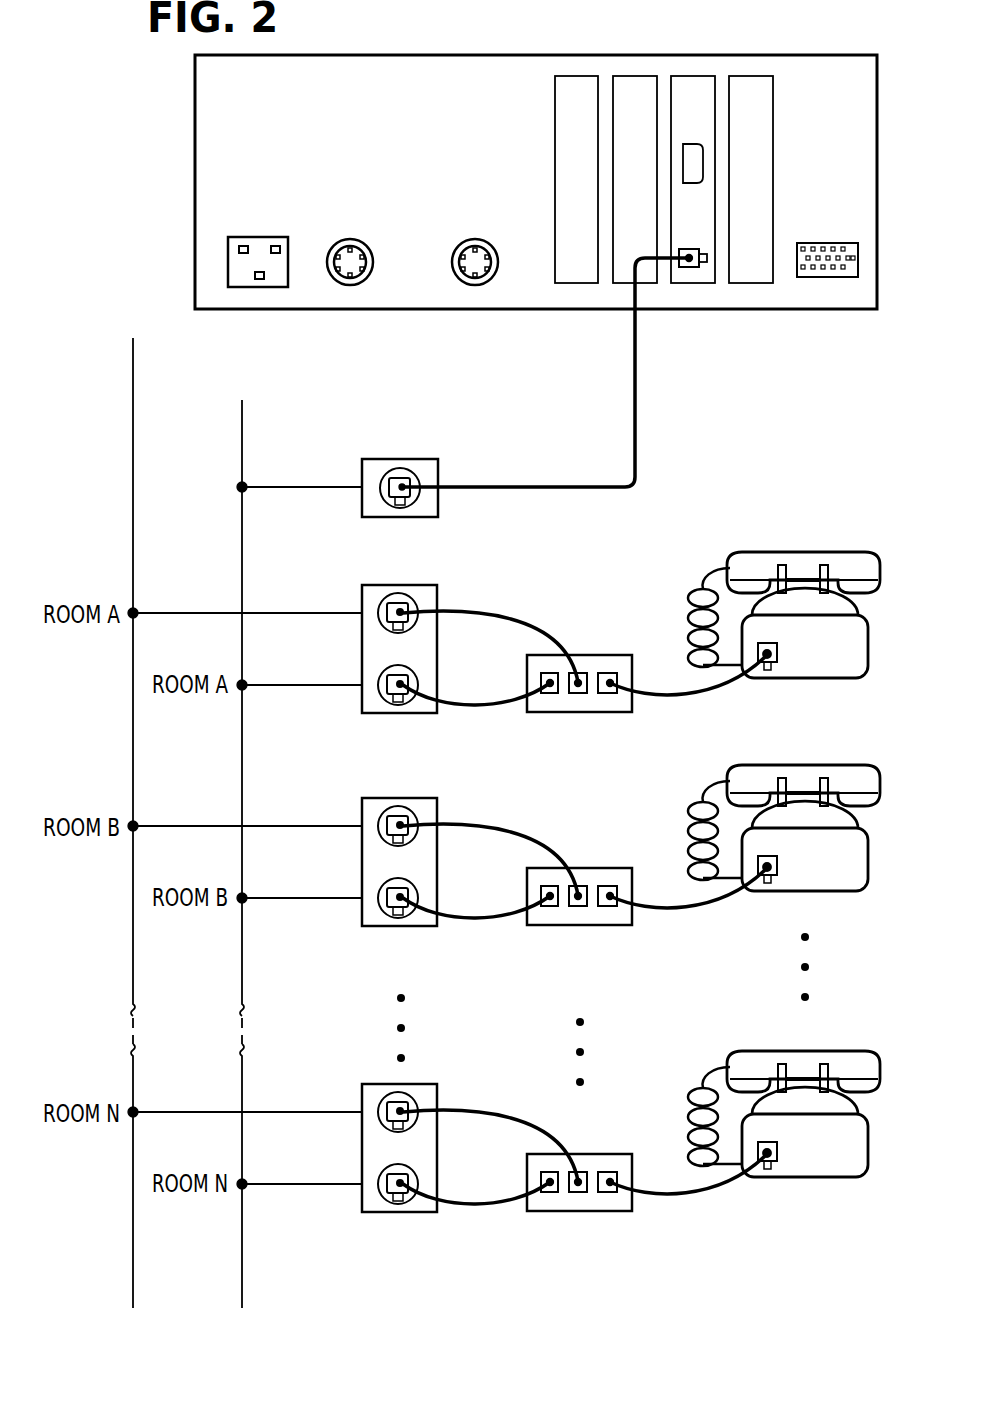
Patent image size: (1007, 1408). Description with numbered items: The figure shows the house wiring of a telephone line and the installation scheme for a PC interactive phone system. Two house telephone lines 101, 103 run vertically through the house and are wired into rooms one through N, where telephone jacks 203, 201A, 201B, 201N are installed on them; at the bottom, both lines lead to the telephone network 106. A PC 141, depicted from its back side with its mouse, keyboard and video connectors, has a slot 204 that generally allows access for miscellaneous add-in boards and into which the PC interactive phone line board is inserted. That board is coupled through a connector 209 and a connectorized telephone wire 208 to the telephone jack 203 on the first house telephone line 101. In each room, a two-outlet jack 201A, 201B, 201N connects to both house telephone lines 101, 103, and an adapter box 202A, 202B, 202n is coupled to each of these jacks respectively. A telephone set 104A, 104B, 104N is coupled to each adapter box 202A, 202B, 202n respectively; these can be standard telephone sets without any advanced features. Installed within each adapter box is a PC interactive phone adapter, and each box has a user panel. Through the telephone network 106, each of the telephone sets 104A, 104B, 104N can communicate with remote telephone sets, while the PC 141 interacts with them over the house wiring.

The PC 141 is at (195, 133).
The slot 204 is at (693, 95).
The connector 209 is at (689, 268).
The connectorized telephone wire 208 is at (637, 412).
The house telephone line 103 is at (133, 368).
The house telephone line 101 is at (242, 425).
The telephone jack 203 is at (422, 517).
The telephone jack 201A is at (375, 713).
The telephone jack 201B is at (369, 881).
The telephone jack 201N is at (368, 1167).
The adapter box 202A is at (608, 712).
The adapter box 202B is at (602, 918).
The adapter box 202n is at (602, 1204).
The telephone set 104A is at (803, 552).
The telephone set 104B is at (784, 807).
The telephone set 104N is at (784, 1135).
The telephone network 106 is at (133, 1280).